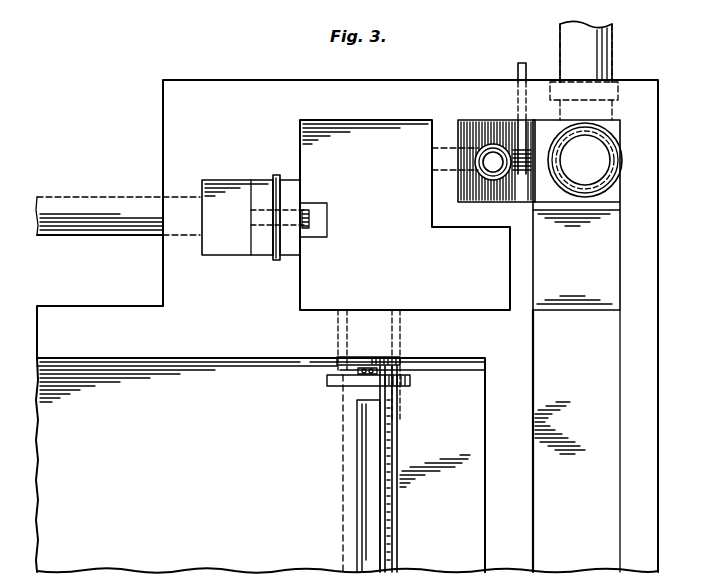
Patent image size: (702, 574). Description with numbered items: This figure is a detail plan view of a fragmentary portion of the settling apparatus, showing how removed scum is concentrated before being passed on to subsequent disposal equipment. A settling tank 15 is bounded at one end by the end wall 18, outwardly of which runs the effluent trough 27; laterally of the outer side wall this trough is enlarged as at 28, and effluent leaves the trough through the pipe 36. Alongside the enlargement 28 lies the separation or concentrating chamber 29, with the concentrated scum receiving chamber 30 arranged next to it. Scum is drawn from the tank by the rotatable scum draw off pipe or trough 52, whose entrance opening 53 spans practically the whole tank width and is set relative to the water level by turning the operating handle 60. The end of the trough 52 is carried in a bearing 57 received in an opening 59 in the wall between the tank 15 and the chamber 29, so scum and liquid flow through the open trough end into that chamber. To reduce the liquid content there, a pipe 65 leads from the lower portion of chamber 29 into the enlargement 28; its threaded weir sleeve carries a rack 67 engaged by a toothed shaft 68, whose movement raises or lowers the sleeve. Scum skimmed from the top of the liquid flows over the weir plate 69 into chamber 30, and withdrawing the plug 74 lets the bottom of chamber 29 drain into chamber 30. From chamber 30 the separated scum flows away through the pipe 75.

The settling tank 15 is at (261, 465).
The end wall 18 is at (485, 498).
The effluent trough 27 is at (576, 441).
The effluent trough enlargement 28 is at (577, 215).
The separation or concentrating chamber 29 is at (405, 215).
The concentrated scum receiving chamber 30 is at (253, 217).
The pipe 36 is at (622, 52).
The scum draw off pipe or trough 52 is at (343, 542).
The opening 53 is at (368, 492).
The bearing 57 is at (400, 360).
The opening 59 is at (336, 318).
The operating handle 60 is at (364, 382).
The pipe 65 is at (460, 149).
The rack 67 is at (498, 148).
The toothed shaft 68 is at (516, 73).
The weir plate 69 is at (285, 182).
The plug 74 is at (310, 222).
The pipe 75 is at (92, 198).